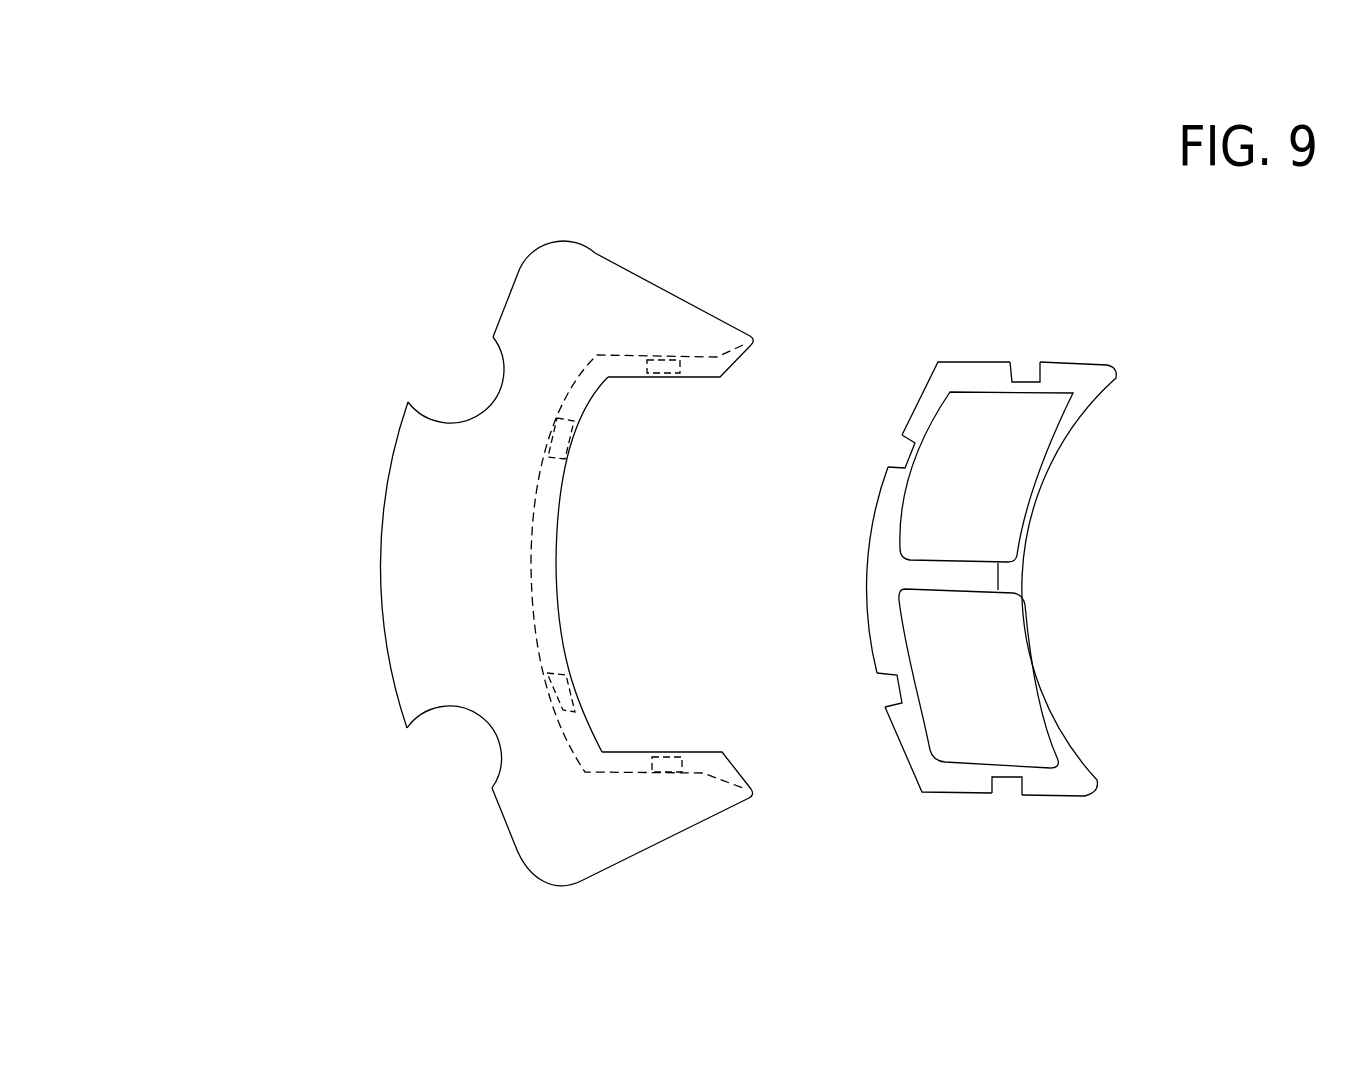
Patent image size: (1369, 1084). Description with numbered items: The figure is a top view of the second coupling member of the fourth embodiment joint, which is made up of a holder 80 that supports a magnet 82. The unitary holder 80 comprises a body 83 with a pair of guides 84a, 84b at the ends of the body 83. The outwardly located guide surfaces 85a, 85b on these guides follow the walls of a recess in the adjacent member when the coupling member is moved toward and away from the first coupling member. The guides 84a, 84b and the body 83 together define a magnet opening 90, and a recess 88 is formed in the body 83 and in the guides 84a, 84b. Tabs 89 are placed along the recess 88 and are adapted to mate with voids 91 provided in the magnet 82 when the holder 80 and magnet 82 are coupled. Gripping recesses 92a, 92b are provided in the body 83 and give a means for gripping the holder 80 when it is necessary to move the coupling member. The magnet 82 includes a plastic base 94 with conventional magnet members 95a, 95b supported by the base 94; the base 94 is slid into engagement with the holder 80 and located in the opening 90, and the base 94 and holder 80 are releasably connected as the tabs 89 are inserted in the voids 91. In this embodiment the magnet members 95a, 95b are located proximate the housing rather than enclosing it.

The holder 80 is at (466, 531).
The magnet 82 is at (1019, 571).
The body 83 is at (422, 525).
The guide 84a is at (645, 310).
The guide 84b is at (633, 830).
The guide surface 85a is at (595, 253).
The guide surface 85b is at (693, 828).
The recess 88 is at (533, 550).
The tabs 89 is at (570, 450).
The magnet opening 90 is at (690, 667).
The voids 91 is at (892, 440).
The gripping recess 92a is at (448, 420).
The gripping recess 92b is at (447, 703).
The plastic base 94 is at (878, 582).
The magnet member 95a is at (945, 486).
The magnet member 95b is at (933, 690).